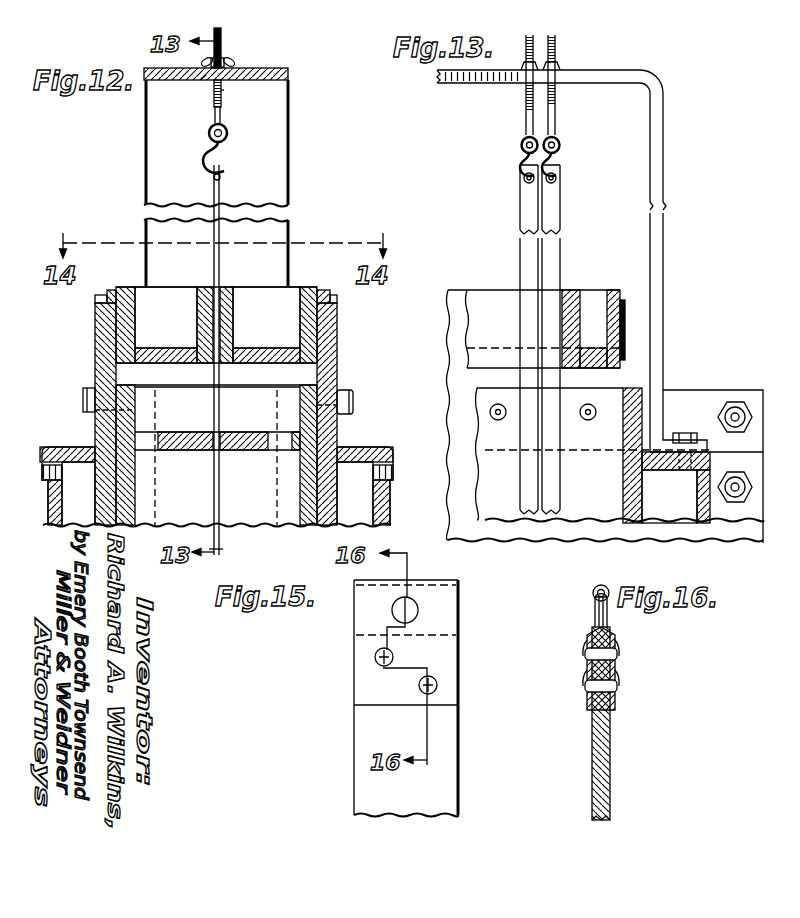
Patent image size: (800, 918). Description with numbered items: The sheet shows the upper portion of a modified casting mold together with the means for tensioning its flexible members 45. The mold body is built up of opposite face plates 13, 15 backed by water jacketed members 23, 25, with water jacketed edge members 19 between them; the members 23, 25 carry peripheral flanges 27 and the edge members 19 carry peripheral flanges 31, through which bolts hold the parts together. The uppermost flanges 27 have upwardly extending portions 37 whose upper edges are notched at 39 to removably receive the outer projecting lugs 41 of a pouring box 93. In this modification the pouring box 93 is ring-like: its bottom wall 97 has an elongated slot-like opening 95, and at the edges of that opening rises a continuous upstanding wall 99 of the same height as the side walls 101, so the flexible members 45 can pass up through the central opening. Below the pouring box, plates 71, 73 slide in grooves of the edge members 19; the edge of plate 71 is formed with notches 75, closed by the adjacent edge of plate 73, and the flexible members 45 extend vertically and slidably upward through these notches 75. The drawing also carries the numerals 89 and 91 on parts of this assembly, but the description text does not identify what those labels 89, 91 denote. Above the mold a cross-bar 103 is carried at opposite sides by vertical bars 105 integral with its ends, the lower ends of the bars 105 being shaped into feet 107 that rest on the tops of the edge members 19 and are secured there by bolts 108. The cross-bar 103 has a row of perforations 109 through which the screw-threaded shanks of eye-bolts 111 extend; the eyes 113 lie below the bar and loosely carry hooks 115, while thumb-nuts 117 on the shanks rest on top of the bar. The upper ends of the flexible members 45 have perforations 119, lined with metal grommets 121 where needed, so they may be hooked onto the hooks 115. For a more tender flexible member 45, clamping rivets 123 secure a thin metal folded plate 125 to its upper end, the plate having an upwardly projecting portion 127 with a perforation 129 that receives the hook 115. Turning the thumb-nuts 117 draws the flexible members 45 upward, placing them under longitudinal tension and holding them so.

In FIG. 12, the face plate 13 is at (128, 518).
In FIG. 13, the face plate 13 is at (745, 392).
In FIG. 12, the face plate 15 is at (305, 516).
In FIG. 13, the water jacketed member 19 is at (705, 510).
In FIG. 12, the water jacketed member 23 is at (68, 510).
In FIG. 12, the water jacketed member 25 is at (385, 505).
In FIG. 12, the peripheral flange 27 is at (95, 424).
In FIG. 12, the peripheral flange 31 is at (155, 411).
In FIG. 13, the peripheral flange 31 is at (635, 388).
In FIG. 12, the upwardly extending portion 37 is at (97, 339).
In FIG. 13, the upwardly extending portion 37 is at (625, 347).
In FIG. 12, the notch 39 is at (95, 300).
In FIG. 12, the lug 41 is at (113, 287).
In FIG. 12, the flexible member 45 is at (222, 254).
In FIG. 13, the flexible member 45 is at (520, 213).
In FIG. 16, the flexible member 45 is at (596, 768).
In FIG. 12, the plate 71 is at (191, 455).
In FIG. 12, the plate 73 is at (241, 464).
In FIG. 12, the notch 75 is at (222, 436).
In FIG. 12, the washer plate 89 is at (148, 352).
In FIG. 12, the passage 91 is at (148, 452).
In FIG. 12, the pouring box 93 is at (160, 287).
In FIG. 13, the pouring box 93 is at (488, 316).
In FIG. 12, the slot-like opening 95 is at (179, 375).
In FIG. 13, the slot-like opening 95 is at (480, 357).
In FIG. 12, the bottom wall 97 is at (266, 317).
In FIG. 12, the upstanding wall 99 is at (240, 305).
In FIG. 13, the upstanding wall 99 is at (590, 288).
In FIG. 12, the side wall 101 is at (138, 311).
In FIG. 13, the side wall 101 is at (598, 290).
In FIG. 12, the cross-bar 103 is at (262, 70).
In FIG. 13, the cross-bar 103 is at (592, 70).
In FIG. 12, the vertical bar 105 is at (290, 157).
In FIG. 13, the vertical bar 105 is at (665, 163).
In FIG. 13, the foot 107 is at (670, 432).
In FIG. 13, the bolt 108 is at (688, 433).
In FIG. 12, the perforation 109 is at (202, 80).
In FIG. 13, the perforation 109 is at (473, 87).
In FIG. 12, the eye-bolt 111 is at (222, 95).
In FIG. 13, the eye-bolt 111 is at (548, 110).
In FIG. 12, the eye 113 is at (208, 136).
In FIG. 12, the hook 115 is at (204, 170).
In FIG. 13, the hook 115 is at (556, 157).
In FIG. 12, the thumb-nut 117 is at (233, 61).
In FIG. 13, the perforation 119 is at (521, 180).
In FIG. 12, the grommet 121 is at (224, 186).
In FIG. 13, the grommet 121 is at (522, 190).
In FIG. 15, the clamping rivet 123 is at (375, 660).
In FIG. 16, the clamping rivet 123 is at (616, 685).
In FIG. 15, the folded plate 125 is at (443, 662).
In FIG. 16, the folded plate 125 is at (589, 668).
In FIG. 15, the upwardly projecting portion 127 is at (365, 610).
In FIG. 16, the upwardly projecting portion 127 is at (594, 590).
In FIG. 15, the perforation 129 is at (418, 608).
In FIG. 16, the perforation 129 is at (596, 602).